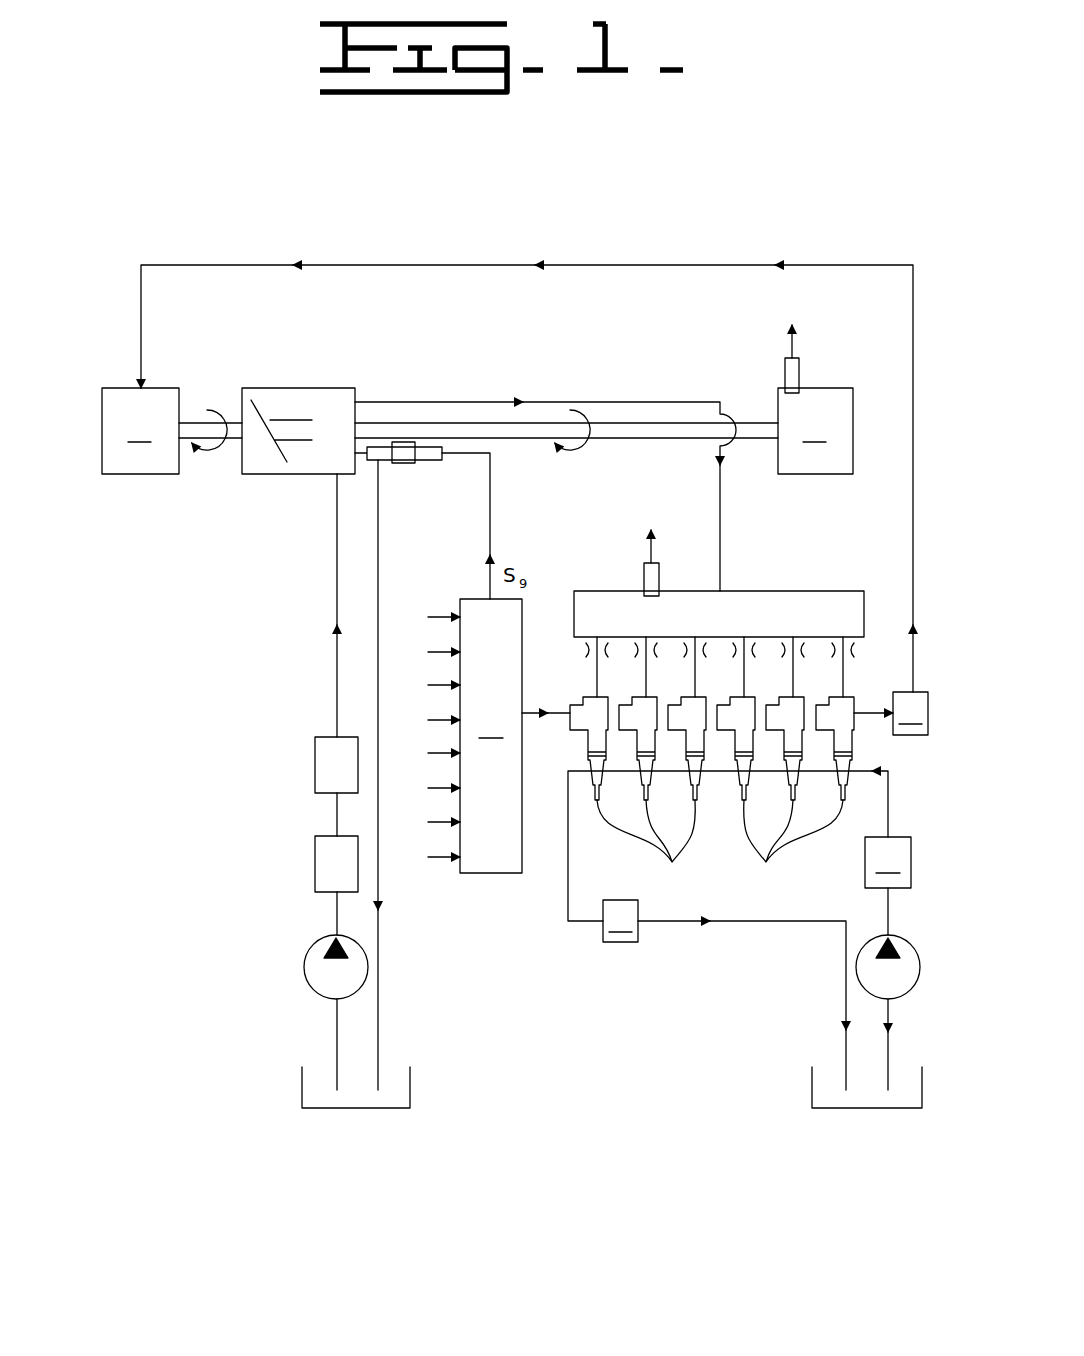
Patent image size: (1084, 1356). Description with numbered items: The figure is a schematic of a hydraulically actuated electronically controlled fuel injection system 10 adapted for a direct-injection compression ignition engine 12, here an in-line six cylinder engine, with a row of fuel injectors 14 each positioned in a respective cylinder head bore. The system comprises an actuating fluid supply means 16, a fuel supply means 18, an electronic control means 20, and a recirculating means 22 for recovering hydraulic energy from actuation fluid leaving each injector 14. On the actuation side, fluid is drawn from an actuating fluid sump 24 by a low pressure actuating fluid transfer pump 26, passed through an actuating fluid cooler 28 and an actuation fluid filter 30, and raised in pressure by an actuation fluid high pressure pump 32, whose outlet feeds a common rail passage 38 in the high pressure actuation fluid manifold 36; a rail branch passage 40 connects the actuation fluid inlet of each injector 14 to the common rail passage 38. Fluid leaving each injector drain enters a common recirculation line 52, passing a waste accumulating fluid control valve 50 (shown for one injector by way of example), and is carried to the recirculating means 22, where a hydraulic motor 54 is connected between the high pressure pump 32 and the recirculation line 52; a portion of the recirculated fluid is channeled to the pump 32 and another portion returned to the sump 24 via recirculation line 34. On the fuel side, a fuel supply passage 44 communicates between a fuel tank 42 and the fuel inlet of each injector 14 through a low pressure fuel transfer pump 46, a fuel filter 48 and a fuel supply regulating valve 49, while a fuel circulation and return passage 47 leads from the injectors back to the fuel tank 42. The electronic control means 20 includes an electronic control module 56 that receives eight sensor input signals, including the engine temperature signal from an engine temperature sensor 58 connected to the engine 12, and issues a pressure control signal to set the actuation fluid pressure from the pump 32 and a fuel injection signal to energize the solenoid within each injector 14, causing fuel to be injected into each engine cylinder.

The fuel injection system 10 is at (690, 215).
The engine 12 is at (815, 431).
The fuel injector 14 is at (712, 756).
The actuating fluid supply means 16 is at (366, 1132).
The fuel supply means 18 is at (870, 1118).
The electronic control means 20 is at (487, 878).
The actuation fluid recirculating means 22 is at (117, 248).
The actuating fluid sump 24 is at (410, 1082).
The actuating fluid transfer pump 26 is at (313, 975).
The actuating fluid cooler 28 is at (315, 858).
The actuation fluid filter 30 is at (315, 777).
The actuation fluid high pressure pump 32 is at (292, 474).
The recirculation line 34 is at (380, 966).
The actuation fluid manifold 36 is at (766, 588).
The common rail passage 38 is at (622, 590).
The rail branch passage 40 is at (846, 677).
The fuel tank 42 is at (812, 1097).
The fuel supply passage 44 is at (890, 797).
The fuel transfer pump 46 is at (917, 952).
The fuel circulation and return passage 47 is at (846, 940).
The fuel filter 48 is at (888, 886).
The fuel supply regulating valve 49 is at (620, 921).
The waste accumulating fluid control valve 50 is at (891, 713).
The common recirculation line 52 is at (382, 264).
The hydraulic motor 54 is at (140, 431).
The electronic control module 56 is at (482, 736).
The engine temperature sensor 58 is at (799, 370).